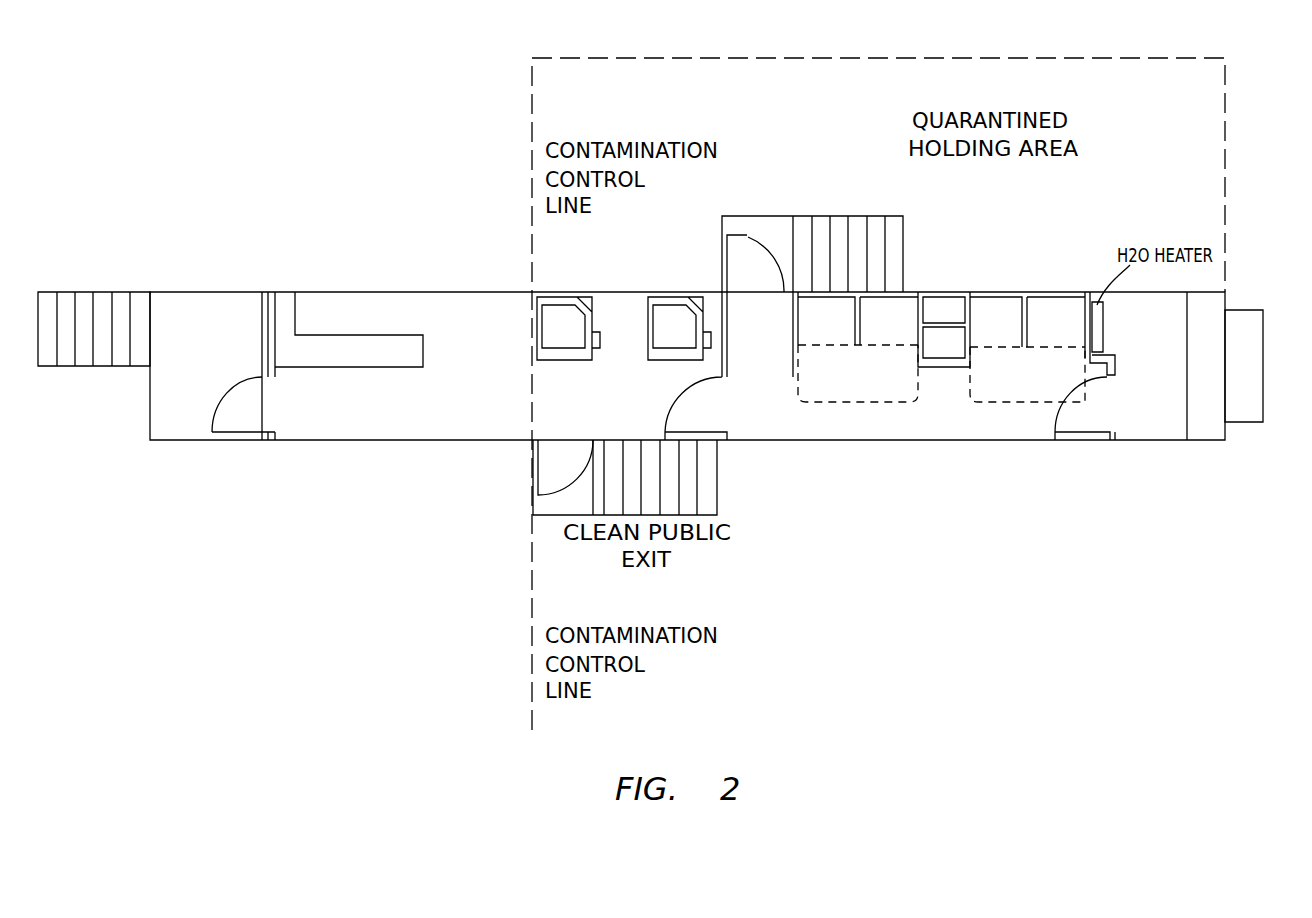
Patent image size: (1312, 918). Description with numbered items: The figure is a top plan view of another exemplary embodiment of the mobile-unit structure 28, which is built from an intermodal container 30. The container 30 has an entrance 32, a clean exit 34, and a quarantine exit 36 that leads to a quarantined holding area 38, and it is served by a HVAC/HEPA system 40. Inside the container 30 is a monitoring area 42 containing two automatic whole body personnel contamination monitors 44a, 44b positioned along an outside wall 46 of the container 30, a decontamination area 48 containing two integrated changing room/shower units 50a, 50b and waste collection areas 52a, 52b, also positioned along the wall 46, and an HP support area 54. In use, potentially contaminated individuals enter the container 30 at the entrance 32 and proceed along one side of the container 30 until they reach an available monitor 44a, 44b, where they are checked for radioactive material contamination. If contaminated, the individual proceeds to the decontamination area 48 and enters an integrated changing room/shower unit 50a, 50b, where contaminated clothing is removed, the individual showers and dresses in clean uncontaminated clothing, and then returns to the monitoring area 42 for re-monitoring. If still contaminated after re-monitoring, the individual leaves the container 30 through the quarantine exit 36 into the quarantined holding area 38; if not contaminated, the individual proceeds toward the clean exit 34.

The mobile-unit structure 28 is at (336, 280).
The intermodal container 30 is at (378, 442).
The entrance 32 is at (262, 408).
The clean exit 34 is at (556, 517).
The quarantine exit 36 is at (745, 216).
The quarantined holding area 38 is at (1001, 202).
The HVAC/HEPA system 40 is at (1263, 365).
The monitoring area 42 is at (550, 390).
The automatic whole body personnel contamination monitor 44a is at (537, 326).
The automatic whole body personnel contamination monitor 44b is at (648, 338).
The outside wall 46 is at (427, 293).
The decontamination area 48 is at (953, 430).
The integrated changing room/shower unit 50a is at (858, 378).
The integrated changing room/shower unit 50b is at (1015, 377).
The waste collection area 52a is at (952, 336).
The waste collection area 52b is at (937, 297).
The HP support area 54 is at (1149, 420).